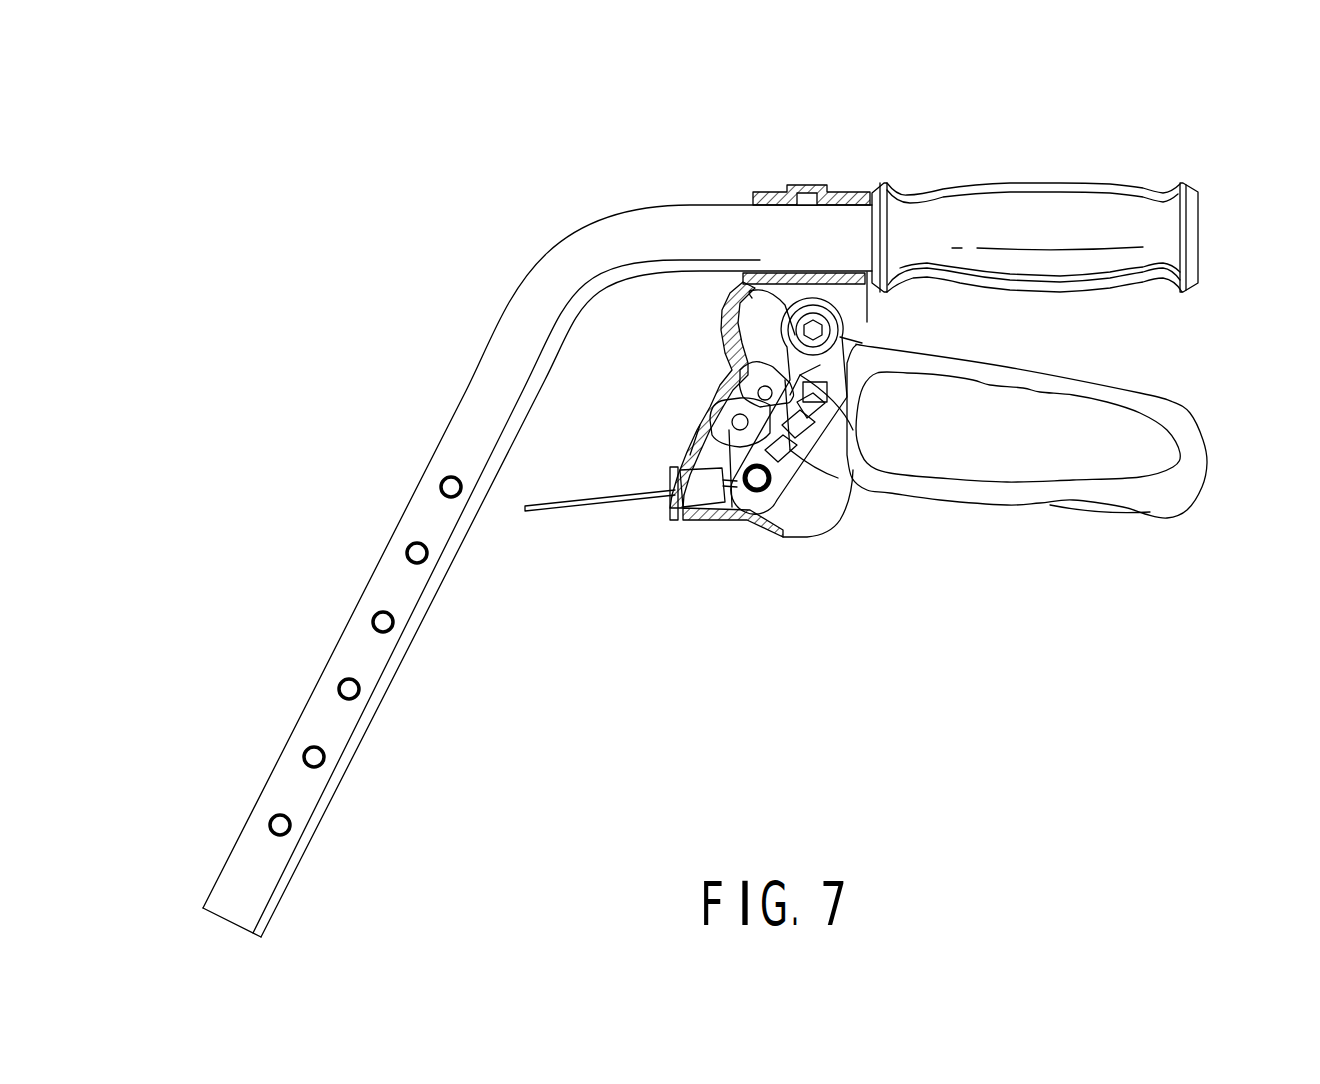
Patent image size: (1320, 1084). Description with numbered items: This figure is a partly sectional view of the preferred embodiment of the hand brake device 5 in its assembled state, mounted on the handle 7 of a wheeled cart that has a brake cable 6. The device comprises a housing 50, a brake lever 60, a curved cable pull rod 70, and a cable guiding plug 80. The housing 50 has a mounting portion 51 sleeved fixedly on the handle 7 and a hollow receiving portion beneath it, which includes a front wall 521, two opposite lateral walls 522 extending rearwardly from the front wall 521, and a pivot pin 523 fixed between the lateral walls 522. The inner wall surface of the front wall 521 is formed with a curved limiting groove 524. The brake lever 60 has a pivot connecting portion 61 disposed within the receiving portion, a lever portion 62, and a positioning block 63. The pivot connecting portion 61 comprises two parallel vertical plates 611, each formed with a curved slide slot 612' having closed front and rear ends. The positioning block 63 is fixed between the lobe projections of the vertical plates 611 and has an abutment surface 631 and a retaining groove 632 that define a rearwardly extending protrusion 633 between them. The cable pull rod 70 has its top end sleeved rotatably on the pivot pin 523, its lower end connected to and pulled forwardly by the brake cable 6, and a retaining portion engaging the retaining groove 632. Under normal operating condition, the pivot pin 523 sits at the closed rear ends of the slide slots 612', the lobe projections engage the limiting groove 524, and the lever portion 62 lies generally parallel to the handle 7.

The hand brake device 5 is at (825, 548).
The brake cable 6 is at (572, 512).
The handle 7 is at (1110, 183).
The housing 50 is at (768, 545).
The mounting portion 51 is at (833, 190).
The brake lever 60 is at (1202, 422).
The pivot connecting portion 61 is at (642, 207).
The lever portion 62 is at (1060, 490).
The positioning block 63 is at (742, 515).
The cable pull rod 70 is at (836, 444).
The cable guiding plug 80 is at (670, 512).
The front wall 521 is at (723, 385).
The lateral walls 522 is at (838, 515).
The pivot pin 523 is at (815, 328).
The curved limiting groove 524 is at (700, 428).
The vertical plates 611 is at (760, 337).
The curved slide slot 612' is at (785, 201).
The abutment surface 631 is at (787, 380).
The retaining groove 632 is at (710, 408).
The rearwardly extending protrusion 633 is at (787, 385).